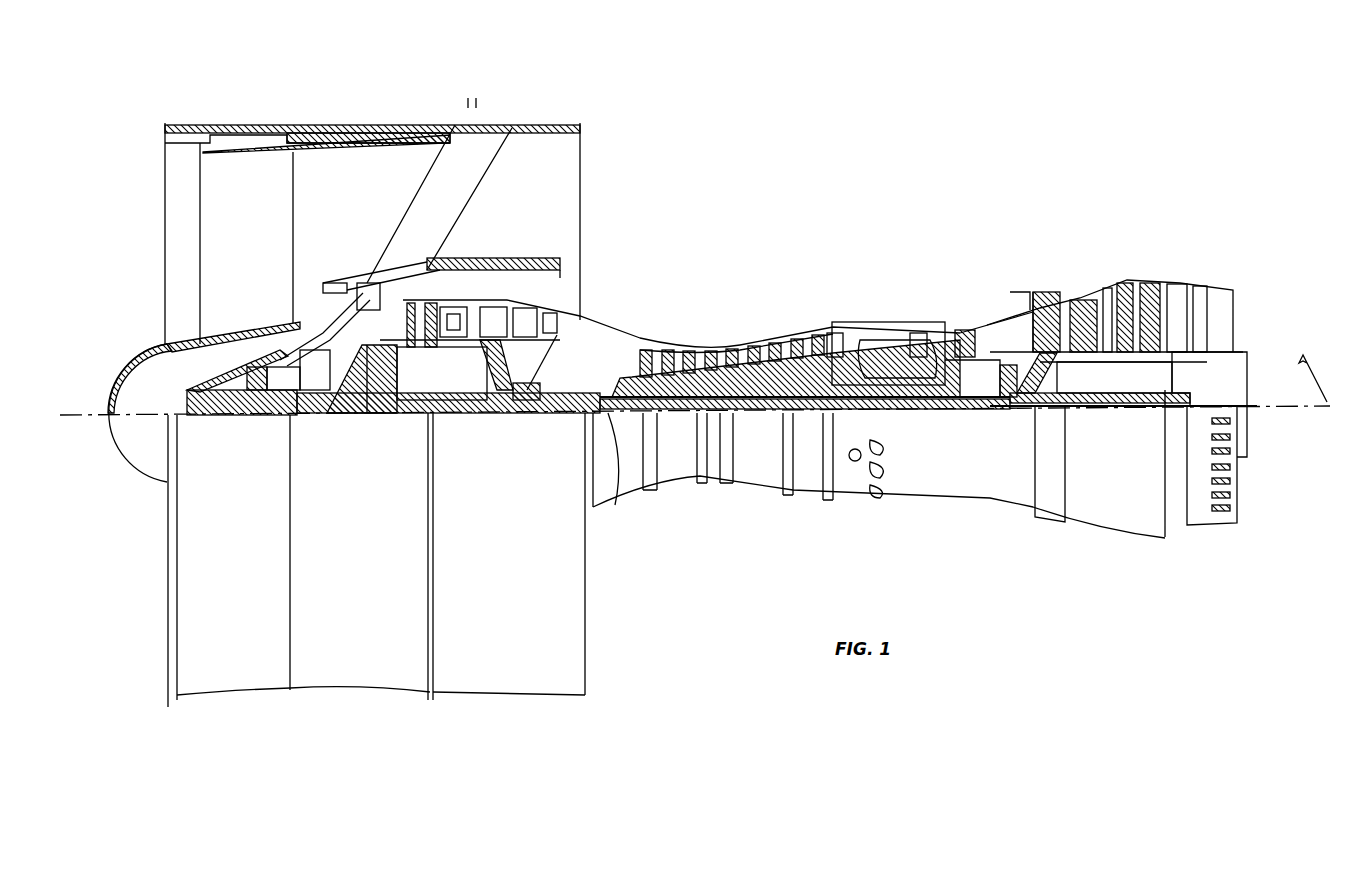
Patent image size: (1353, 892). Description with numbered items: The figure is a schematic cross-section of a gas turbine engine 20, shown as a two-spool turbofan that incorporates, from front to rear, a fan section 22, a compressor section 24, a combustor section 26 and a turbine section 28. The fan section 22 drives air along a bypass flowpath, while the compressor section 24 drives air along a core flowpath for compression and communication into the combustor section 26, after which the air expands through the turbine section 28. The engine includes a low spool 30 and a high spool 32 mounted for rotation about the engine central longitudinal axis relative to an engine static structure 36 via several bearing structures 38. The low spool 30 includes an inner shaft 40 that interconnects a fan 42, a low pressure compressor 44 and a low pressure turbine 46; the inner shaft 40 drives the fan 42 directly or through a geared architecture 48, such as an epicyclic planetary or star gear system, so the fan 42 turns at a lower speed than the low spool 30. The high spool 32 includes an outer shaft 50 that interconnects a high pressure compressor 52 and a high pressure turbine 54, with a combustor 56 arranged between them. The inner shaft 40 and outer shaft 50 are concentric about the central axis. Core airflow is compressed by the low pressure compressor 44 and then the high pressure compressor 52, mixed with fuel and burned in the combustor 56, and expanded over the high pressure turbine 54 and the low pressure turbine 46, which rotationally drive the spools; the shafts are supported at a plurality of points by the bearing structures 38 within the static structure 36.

The gas turbine engine 20 is at (924, 158).
The fan section 22 is at (420, 108).
The compressor section 24 is at (430, 228).
The combustor section 26 is at (945, 224).
The turbine section 28 is at (1175, 221).
The low spool 30 is at (767, 415).
The high spool 32 is at (795, 335).
The engine static structure 36 is at (812, 497).
The bearing structures 38 is at (1013, 388).
The inner shaft 40 is at (612, 435).
The fan 42 is at (253, 255).
The low pressure compressor 44 is at (585, 296).
The low pressure turbine 46 is at (1107, 288).
The geared architecture 48 is at (373, 393).
The outer shaft 50 is at (897, 410).
The high pressure compressor 52 is at (737, 343).
The high pressure turbine 54 is at (960, 337).
The combustor 56 is at (890, 350).